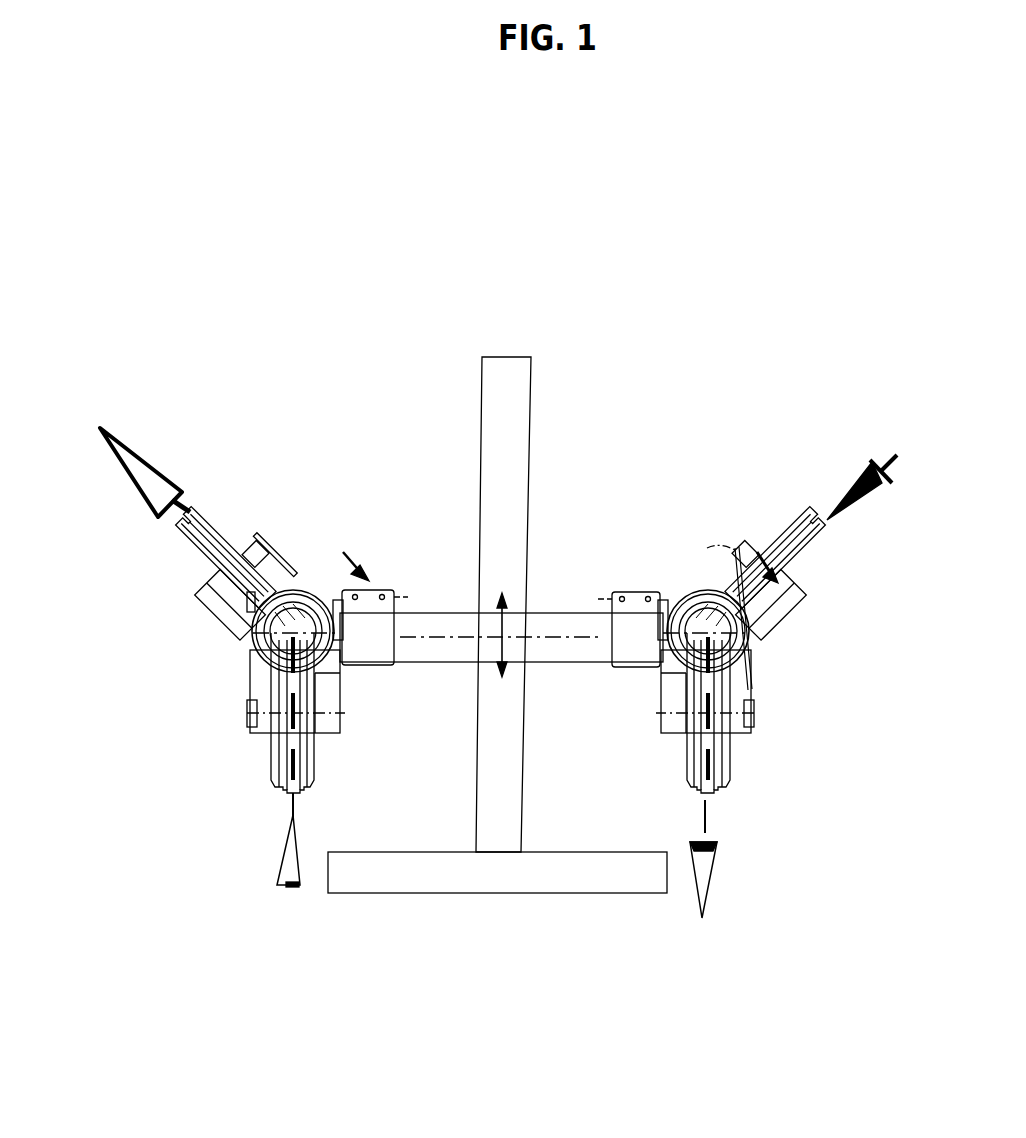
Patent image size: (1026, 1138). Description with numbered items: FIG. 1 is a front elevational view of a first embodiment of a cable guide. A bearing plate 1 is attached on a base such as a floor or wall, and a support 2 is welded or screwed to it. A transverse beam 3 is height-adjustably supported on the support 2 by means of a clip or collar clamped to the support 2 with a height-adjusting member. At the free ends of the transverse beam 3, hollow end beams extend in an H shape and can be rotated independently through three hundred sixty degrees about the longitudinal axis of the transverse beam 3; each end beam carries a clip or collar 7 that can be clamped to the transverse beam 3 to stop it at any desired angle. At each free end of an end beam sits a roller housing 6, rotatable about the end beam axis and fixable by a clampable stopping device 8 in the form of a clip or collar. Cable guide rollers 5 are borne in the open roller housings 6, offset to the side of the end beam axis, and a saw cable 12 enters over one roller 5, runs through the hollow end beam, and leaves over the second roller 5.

The bearing plate 1 is at (648, 876).
The support 2 is at (505, 722).
The transverse beam 3 is at (468, 638).
The cable guide rollers 5 is at (277, 762).
The roller housing 6 is at (267, 537).
The clip or collar 7 is at (370, 590).
The clampable stopping device 8 is at (248, 598).
The saw cable 12 is at (287, 815).